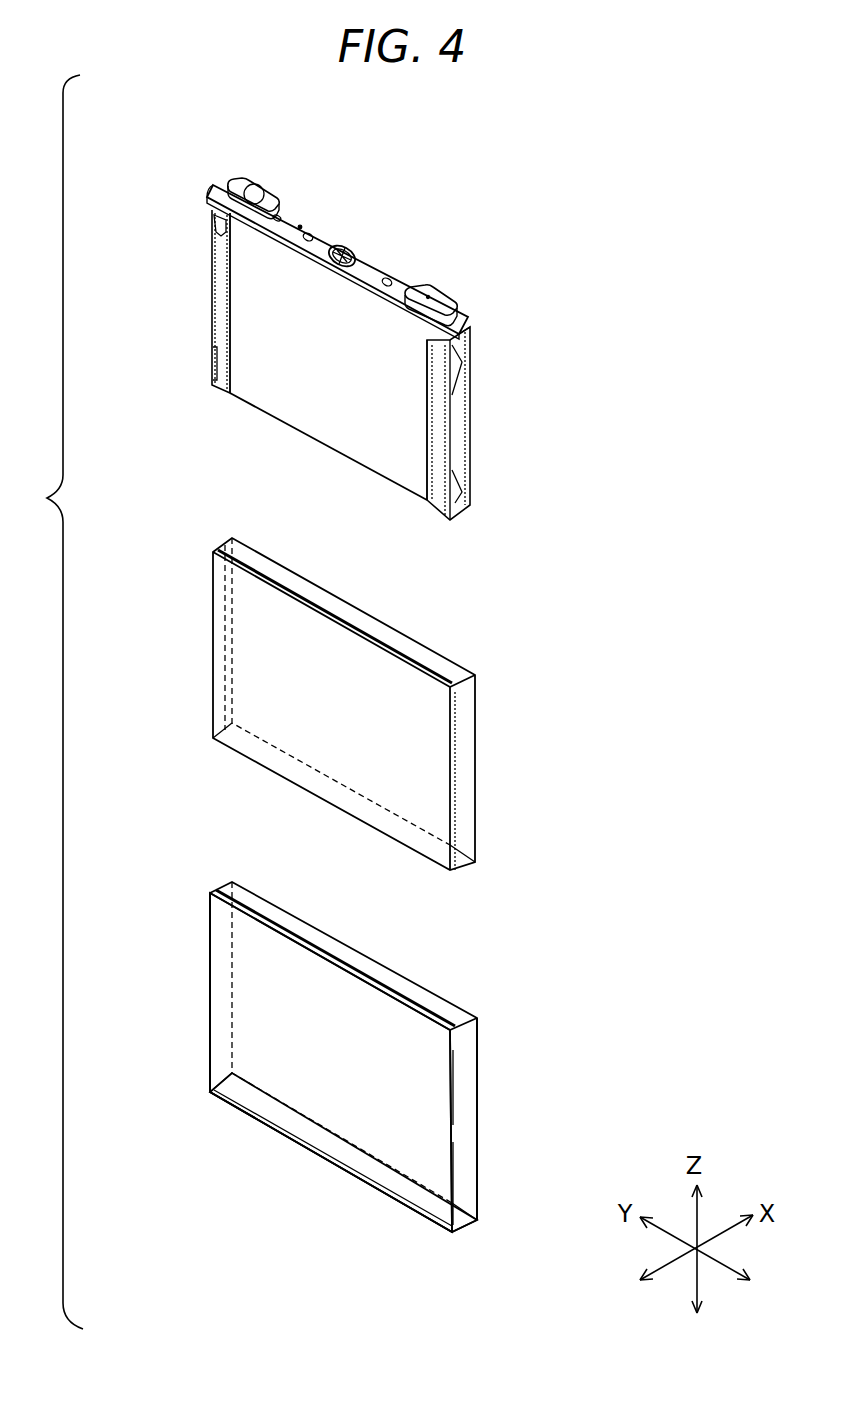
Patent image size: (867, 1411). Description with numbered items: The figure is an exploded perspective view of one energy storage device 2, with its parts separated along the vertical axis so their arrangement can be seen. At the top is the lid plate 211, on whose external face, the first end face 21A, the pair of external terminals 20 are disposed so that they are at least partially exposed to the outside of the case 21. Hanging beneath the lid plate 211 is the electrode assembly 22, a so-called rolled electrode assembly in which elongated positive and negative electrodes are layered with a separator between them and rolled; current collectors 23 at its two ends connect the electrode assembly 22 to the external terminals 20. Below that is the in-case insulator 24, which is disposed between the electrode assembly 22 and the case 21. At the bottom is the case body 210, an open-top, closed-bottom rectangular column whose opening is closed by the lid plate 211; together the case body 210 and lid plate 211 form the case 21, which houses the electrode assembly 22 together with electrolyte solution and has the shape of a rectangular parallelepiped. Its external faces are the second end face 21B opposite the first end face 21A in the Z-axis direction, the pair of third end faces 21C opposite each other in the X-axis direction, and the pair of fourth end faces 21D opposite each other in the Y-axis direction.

The energy storage device 2 is at (485, 268).
The external terminals 20 is at (252, 190).
The case 21 is at (707, 640).
The case body 210 is at (477, 1042).
The lid plate 211 is at (470, 318).
The first end face 21A is at (300, 227).
The second end face 21B is at (288, 1117).
The third end faces 21C is at (405, 1147).
The fourth end faces 21D is at (223, 977).
The electrode assembly 22 is at (282, 390).
The current collector 23 is at (210, 218).
The in-case insulator 24 is at (212, 643).